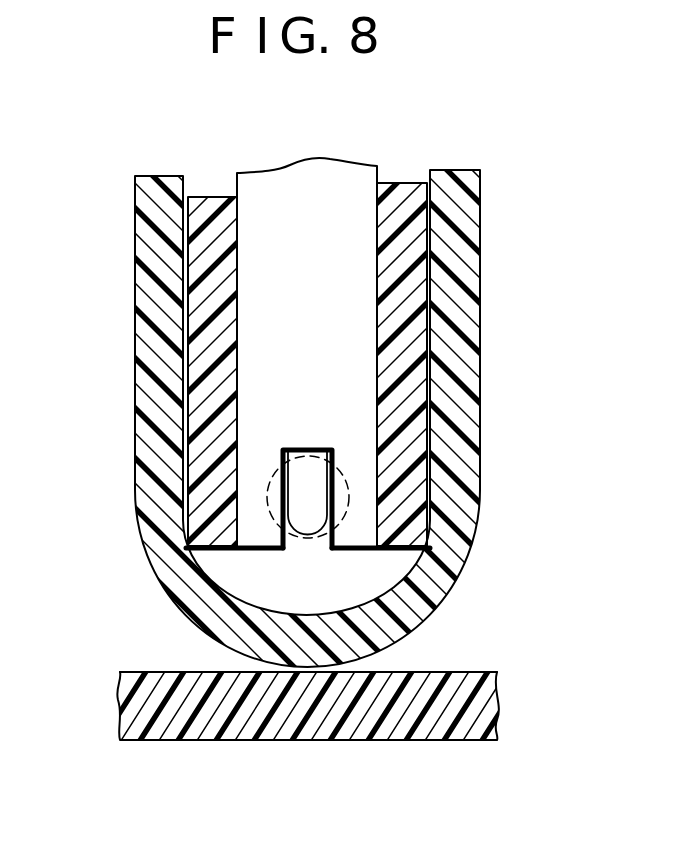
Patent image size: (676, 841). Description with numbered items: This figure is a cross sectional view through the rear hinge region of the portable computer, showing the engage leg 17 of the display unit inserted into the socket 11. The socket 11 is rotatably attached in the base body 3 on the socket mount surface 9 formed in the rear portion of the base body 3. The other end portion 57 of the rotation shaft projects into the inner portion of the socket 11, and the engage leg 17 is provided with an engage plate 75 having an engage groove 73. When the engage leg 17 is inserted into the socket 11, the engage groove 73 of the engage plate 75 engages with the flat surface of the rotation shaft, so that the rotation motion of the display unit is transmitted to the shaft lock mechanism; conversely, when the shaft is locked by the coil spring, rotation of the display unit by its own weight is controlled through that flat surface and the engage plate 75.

The base body 3 is at (404, 700).
The socket mount surface 9 is at (450, 672).
The socket 11 is at (480, 262).
The engage leg 17 is at (400, 184).
The other end portion of the rotation shaft 57 is at (305, 508).
The engage groove 73 is at (326, 548).
The engage plate 75 is at (308, 196).